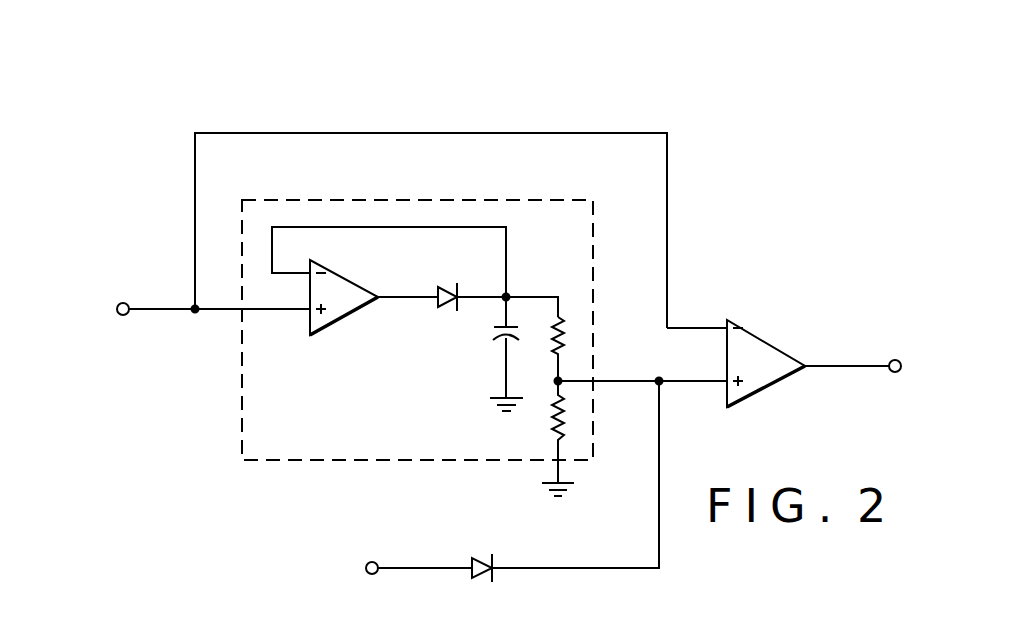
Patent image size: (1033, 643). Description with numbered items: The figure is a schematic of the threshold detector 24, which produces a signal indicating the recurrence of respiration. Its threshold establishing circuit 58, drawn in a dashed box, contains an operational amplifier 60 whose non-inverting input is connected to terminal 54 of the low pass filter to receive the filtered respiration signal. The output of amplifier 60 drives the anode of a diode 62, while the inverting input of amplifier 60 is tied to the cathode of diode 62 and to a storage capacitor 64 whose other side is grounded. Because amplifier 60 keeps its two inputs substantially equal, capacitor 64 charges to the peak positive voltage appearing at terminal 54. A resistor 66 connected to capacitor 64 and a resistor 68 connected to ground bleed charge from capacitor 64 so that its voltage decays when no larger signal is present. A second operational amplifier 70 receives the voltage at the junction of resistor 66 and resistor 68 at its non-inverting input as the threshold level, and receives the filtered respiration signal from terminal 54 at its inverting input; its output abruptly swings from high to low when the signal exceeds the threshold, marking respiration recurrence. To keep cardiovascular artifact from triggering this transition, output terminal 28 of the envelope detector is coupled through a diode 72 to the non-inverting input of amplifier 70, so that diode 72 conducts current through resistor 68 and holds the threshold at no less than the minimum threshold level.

The threshold detector 24 is at (442, 124).
The output terminal of envelope detector 28 is at (377, 562).
The terminal of low pass filter 54 is at (168, 275).
The threshold establishing circuit 58 is at (496, 194).
The operational amplifier 60 is at (335, 274).
The diode 62 is at (452, 305).
The storage capacitor 64 is at (497, 322).
The resistor 66 is at (561, 317).
The resistor 68 is at (555, 408).
The operational amplifier 70 is at (770, 318).
The diode 72 is at (475, 575).